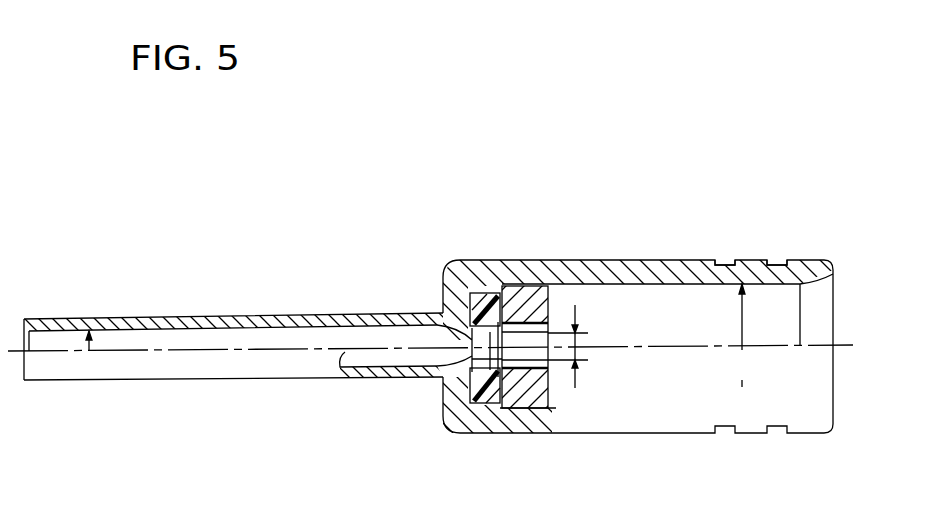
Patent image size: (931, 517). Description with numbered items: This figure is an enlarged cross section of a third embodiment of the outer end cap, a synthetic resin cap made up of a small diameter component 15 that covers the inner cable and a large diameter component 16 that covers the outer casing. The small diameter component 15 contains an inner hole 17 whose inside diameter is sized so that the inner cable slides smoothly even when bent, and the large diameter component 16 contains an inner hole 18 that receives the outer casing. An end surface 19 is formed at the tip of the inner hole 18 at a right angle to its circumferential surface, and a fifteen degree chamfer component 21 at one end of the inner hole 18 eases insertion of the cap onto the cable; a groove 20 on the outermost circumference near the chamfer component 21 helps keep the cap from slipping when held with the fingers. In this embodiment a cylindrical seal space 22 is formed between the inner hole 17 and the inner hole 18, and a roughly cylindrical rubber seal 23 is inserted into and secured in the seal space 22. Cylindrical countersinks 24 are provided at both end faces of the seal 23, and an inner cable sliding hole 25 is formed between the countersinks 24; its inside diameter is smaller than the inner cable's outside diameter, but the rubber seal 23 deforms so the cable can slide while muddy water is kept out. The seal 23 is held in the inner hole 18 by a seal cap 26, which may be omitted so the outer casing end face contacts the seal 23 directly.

The small diameter component 15 is at (176, 367).
The large diameter component 16 is at (657, 412).
The inner hole of the small diameter component 17 is at (212, 336).
The inner hole of the large diameter component 18 is at (680, 296).
The end surface 19 is at (516, 290).
The groove 20 is at (777, 263).
The chamfer component 21 is at (836, 288).
The seal space 22 is at (480, 300).
The seal 23 is at (493, 395).
The countersinks 24 is at (473, 340).
The inner cable sliding hole 25 is at (444, 378).
The seal cap 26 is at (530, 400).